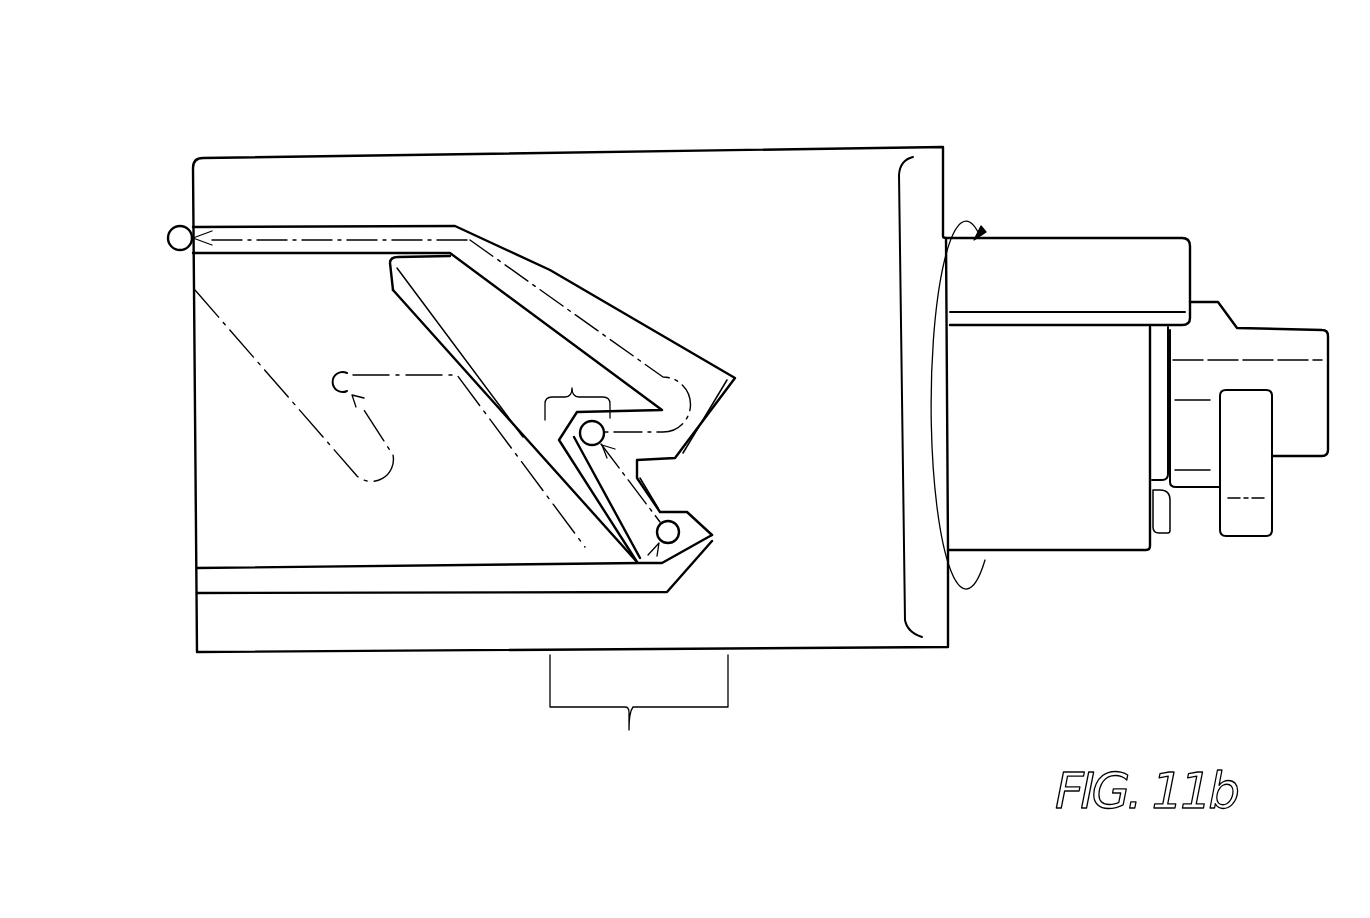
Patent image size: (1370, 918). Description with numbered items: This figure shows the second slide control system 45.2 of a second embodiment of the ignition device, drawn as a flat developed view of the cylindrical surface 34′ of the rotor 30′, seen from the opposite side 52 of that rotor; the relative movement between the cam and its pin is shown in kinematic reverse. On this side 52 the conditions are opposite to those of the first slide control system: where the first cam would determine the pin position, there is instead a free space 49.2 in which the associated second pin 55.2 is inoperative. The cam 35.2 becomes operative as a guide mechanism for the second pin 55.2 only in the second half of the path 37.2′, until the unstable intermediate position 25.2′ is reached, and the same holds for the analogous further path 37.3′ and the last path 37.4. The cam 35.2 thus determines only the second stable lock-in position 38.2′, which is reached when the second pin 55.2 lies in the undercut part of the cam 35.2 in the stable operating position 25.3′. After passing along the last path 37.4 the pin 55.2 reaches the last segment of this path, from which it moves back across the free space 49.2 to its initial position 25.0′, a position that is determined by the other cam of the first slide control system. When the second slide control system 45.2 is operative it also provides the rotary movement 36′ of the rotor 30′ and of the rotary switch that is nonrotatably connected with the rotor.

The rotor 30′ is at (706, 135).
The cylindrical surface 34′ is at (838, 606).
The cam 35.2 is at (545, 549).
The free space 49.2 is at (285, 537).
The path 37.2′ is at (545, 495).
The last path 37.4 is at (567, 305).
The further path 37.3′ is at (650, 502).
The second stable lock-in position 38.2′ is at (572, 385).
The second pin 55.2 is at (173, 230).
The initial position 25.0′ is at (178, 253).
The stable operating position 25.3′ is at (580, 435).
The unstable intermediate position 25.2′ is at (683, 536).
The opposite side 52 is at (898, 383).
The rotary movement 36′ is at (1027, 570).
The second slide control system 45.2 is at (639, 710).